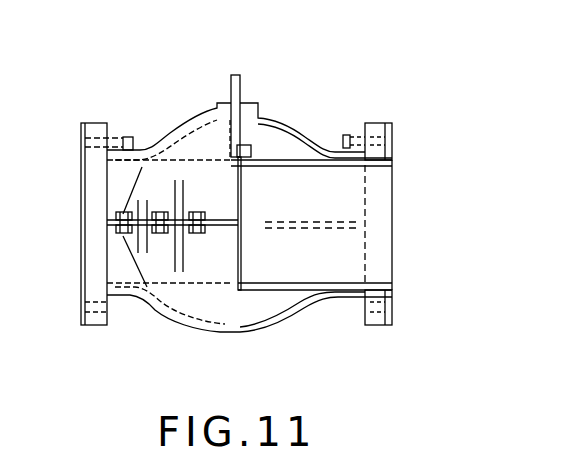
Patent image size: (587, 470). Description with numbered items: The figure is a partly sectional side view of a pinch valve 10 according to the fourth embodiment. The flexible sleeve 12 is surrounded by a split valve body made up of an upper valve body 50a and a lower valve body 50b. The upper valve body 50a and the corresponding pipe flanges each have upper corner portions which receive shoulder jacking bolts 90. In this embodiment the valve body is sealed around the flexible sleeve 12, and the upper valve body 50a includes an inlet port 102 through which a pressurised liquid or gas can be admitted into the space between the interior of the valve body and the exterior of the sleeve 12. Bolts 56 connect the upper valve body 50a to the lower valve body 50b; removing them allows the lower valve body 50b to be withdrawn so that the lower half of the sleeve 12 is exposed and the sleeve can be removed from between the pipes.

The valve assembly 10 is at (380, 66).
The sleeve 12 is at (374, 167).
The upper valve body 50a is at (185, 138).
The lower valve body 50b is at (195, 312).
The bolts 56 is at (118, 242).
The shoulder jacking bolts 90 is at (128, 136).
The inlet port 102 is at (250, 108).